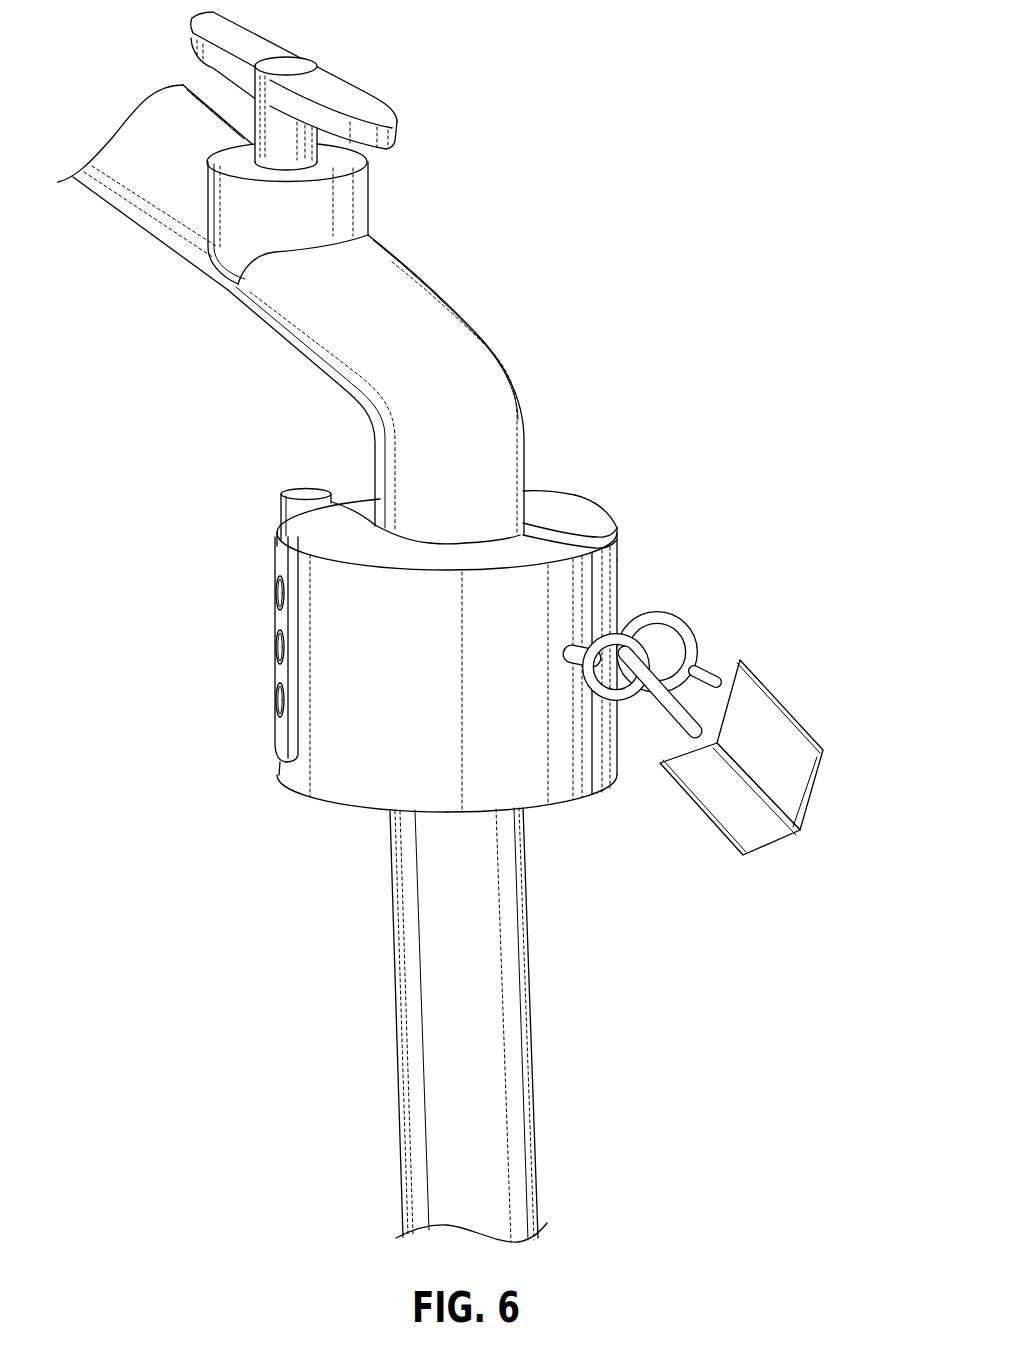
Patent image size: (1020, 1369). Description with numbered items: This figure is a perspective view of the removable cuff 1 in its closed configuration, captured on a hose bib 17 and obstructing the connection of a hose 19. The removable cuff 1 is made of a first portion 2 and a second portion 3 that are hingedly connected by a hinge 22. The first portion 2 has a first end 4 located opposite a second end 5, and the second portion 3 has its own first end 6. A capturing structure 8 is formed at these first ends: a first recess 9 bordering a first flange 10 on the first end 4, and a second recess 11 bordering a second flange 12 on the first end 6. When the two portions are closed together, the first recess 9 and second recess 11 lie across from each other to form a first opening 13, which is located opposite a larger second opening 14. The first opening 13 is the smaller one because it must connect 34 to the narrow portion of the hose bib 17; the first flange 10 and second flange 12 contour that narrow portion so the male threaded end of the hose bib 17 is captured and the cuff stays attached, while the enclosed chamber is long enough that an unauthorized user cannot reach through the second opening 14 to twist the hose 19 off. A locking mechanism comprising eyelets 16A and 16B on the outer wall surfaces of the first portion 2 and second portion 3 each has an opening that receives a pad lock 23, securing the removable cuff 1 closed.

The removable cuff 1 is at (431, 582).
The first portion 2 is at (342, 745).
The second portion 3 is at (571, 504).
The first end 4 is at (313, 518).
The second end 5 is at (343, 807).
The first end 6 is at (599, 525).
The capturing structure 8 is at (540, 503).
The first recess 9 is at (417, 537).
The first flange 10 is at (362, 517).
The second recess 11 is at (619, 541).
The second flange 12 is at (531, 500).
The first opening 13 is at (481, 532).
The second opening 14 is at (556, 804).
The eyelet 16A is at (632, 713).
The eyelet 16B is at (697, 648).
The hose bib 17 is at (372, 281).
The hose 19 is at (512, 958).
The hinge 22 is at (272, 562).
The pad lock 23 is at (790, 783).
The connection to narrow portion of hose bib 34 is at (447, 544).